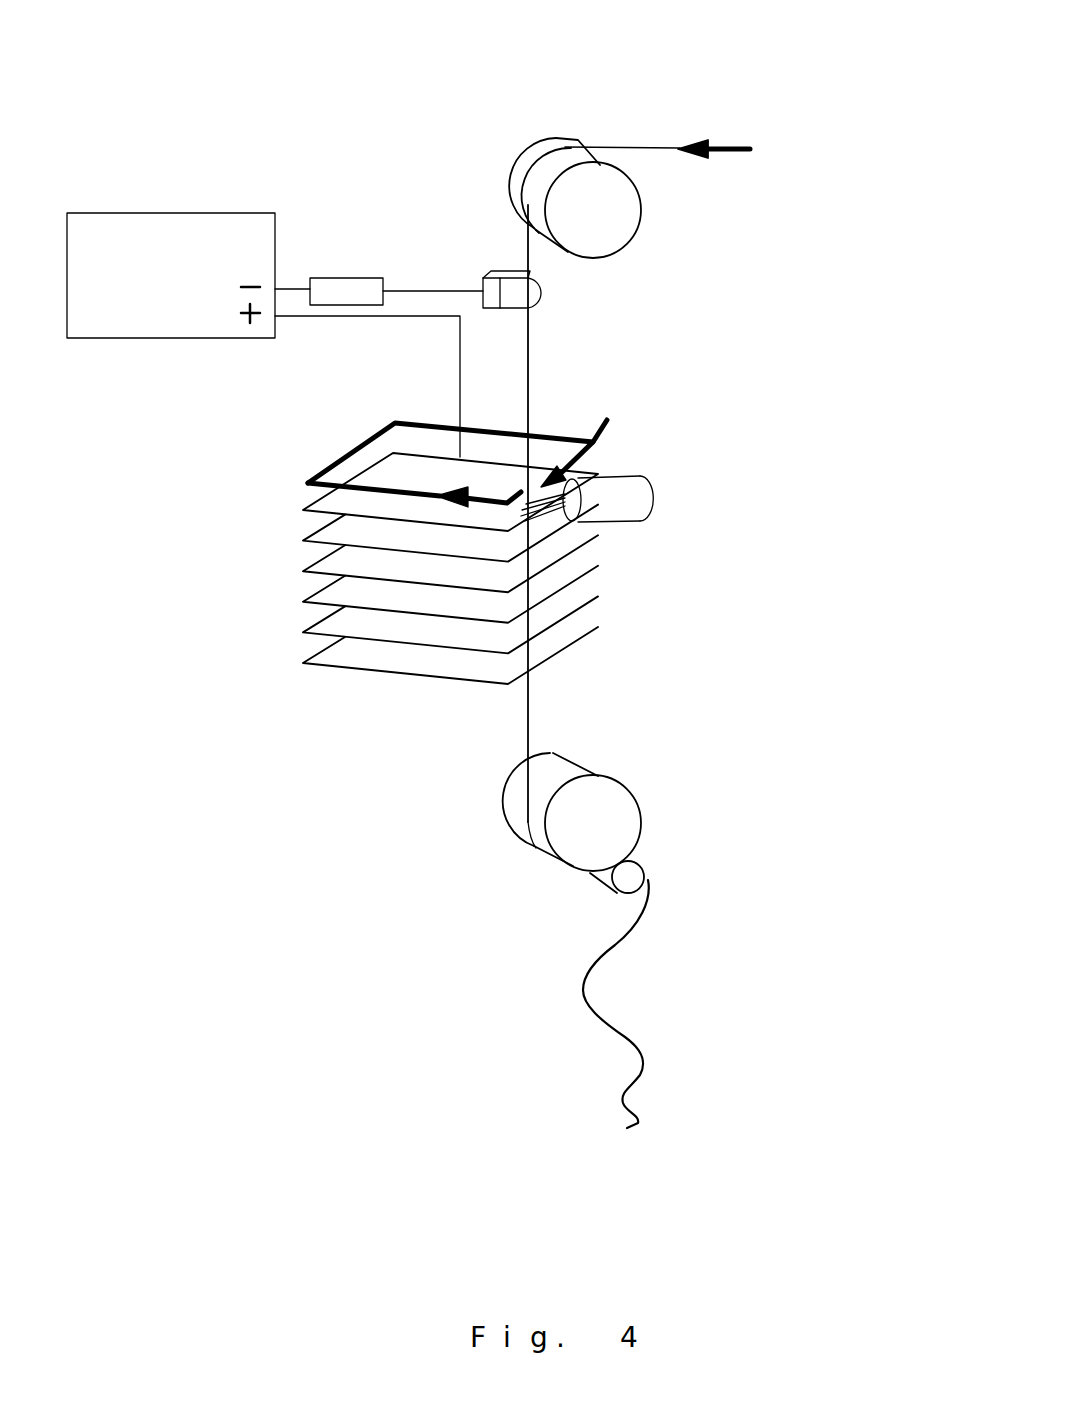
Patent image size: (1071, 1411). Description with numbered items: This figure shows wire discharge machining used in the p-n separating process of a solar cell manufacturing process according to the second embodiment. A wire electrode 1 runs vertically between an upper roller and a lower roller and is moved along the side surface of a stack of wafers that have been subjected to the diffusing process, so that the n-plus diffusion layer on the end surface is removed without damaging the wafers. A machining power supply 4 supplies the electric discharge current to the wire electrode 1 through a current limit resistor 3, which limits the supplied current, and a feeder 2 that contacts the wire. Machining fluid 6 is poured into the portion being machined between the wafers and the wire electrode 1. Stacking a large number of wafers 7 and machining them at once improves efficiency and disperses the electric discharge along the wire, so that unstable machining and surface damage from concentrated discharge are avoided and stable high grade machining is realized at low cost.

The wire electrode 1 is at (633, 147).
The feeder 2 is at (530, 298).
The current limit resistor 3 is at (323, 287).
The machining power supply 4 is at (140, 227).
The machining fluid 6 is at (607, 420).
The stacked nonwoven sheets 7 is at (560, 578).